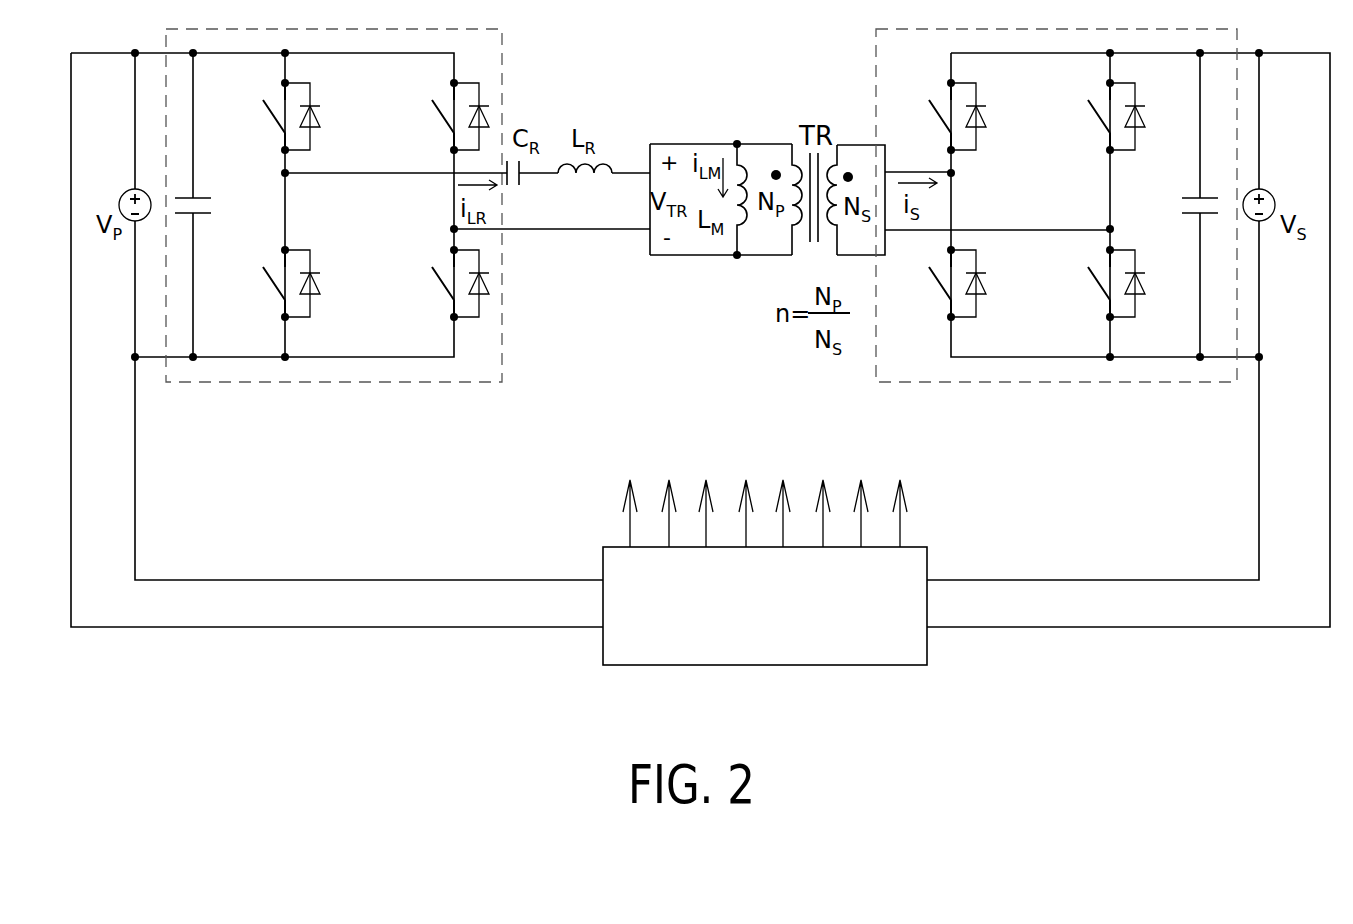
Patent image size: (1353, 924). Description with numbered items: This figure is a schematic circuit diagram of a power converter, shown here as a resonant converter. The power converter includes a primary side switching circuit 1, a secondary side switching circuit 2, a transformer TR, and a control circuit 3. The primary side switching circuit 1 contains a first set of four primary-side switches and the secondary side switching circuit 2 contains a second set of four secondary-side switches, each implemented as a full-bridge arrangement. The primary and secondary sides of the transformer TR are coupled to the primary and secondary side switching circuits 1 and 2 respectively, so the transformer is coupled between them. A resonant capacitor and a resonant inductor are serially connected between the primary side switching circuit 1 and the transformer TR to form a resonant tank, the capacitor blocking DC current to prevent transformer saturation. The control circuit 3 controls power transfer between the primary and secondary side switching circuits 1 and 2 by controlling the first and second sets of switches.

The primary side switching circuit 1 is at (503, 58).
The secondary side switching circuit 2 is at (876, 58).
The control circuit 3 is at (927, 552).